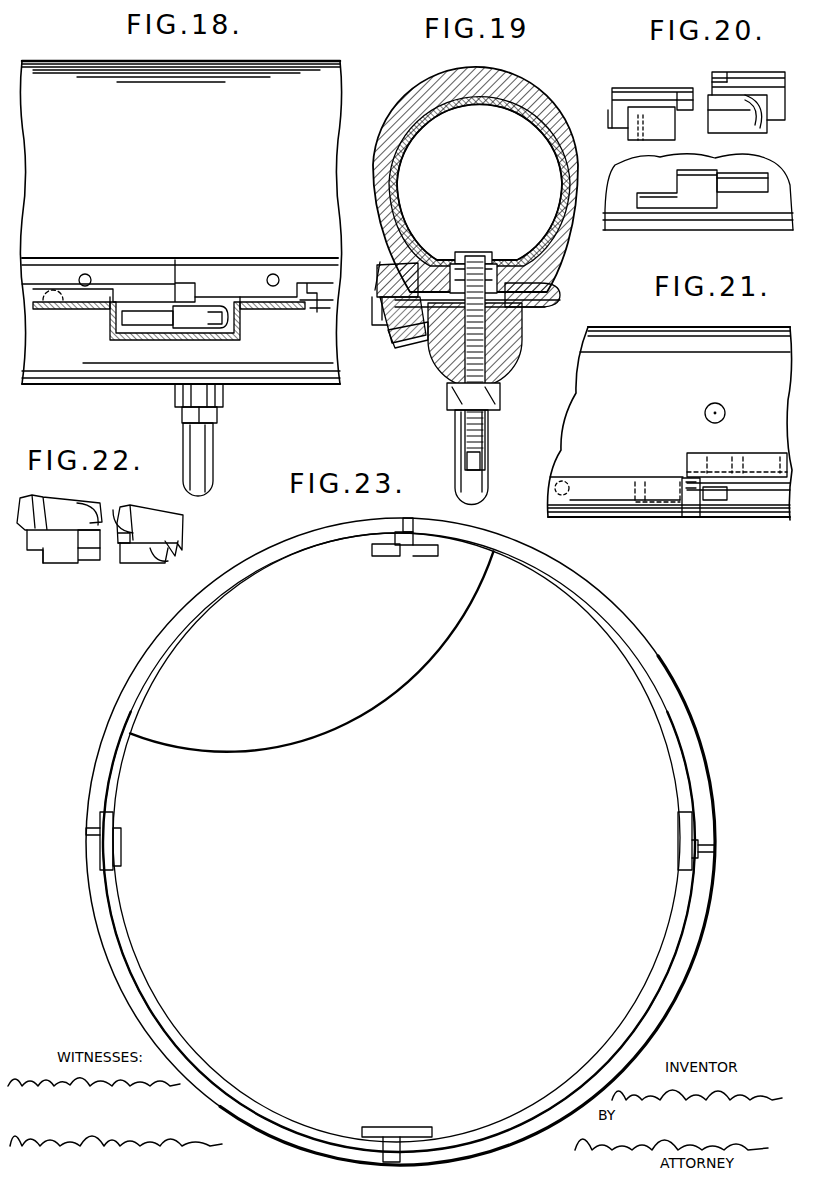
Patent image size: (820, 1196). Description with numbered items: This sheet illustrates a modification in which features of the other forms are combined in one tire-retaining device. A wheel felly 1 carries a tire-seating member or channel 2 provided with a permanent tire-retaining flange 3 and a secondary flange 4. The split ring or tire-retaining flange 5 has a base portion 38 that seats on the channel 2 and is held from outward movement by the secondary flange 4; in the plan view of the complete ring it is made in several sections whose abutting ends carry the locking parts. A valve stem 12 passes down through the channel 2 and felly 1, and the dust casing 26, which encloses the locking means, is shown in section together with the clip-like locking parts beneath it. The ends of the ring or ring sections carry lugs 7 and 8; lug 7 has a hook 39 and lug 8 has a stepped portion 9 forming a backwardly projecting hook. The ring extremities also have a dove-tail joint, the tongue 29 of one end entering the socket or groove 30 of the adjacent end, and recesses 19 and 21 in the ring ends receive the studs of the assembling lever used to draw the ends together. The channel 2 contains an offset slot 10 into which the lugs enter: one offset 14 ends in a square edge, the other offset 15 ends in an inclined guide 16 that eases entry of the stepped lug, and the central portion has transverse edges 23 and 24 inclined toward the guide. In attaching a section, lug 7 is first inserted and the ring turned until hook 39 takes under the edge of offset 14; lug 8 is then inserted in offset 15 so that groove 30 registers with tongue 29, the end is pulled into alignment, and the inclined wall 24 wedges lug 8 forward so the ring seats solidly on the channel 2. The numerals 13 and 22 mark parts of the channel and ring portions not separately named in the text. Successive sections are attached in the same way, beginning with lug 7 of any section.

In FIG. 18, the wheel felly 1 is at (181, 363).
In FIG. 19, the wheel felly 1 is at (506, 355).
In FIG. 18, the channel 2 is at (79, 332).
In FIG. 19, the channel 2 is at (520, 312).
In FIG. 20, the channel 2 is at (608, 181).
In FIG. 21, the channel 2 is at (670, 423).
In FIG. 19, the permanent tire-retaining flange 3 is at (548, 291).
In FIG. 21, the permanent tire-retaining flange 3 is at (610, 338).
In FIG. 18, the secondary flange 4 is at (312, 303).
In FIG. 19, the secondary flange 4 is at (372, 313).
In FIG. 21, the secondary flange 4 is at (762, 520).
In FIG. 18, the split ring 5 is at (47, 272).
In FIG. 19, the split ring 5 is at (395, 281).
In FIG. 20, the split ring 5 is at (625, 92).
In FIG. 21, the split ring 5 is at (618, 490).
In FIG. 22, the split ring 5 is at (66, 508).
In FIG. 23, the split ring 5 is at (117, 708).
In FIG. 18, the lug 7 is at (140, 318).
In FIG. 20, the lug 7 is at (651, 125).
In FIG. 21, the lug 7 is at (660, 482).
In FIG. 22, the lug 7 is at (68, 557).
In FIG. 23, the lug 7 is at (384, 551).
In FIG. 18, the lug 8 is at (197, 330).
In FIG. 19, the lug 8 is at (388, 333).
In FIG. 20, the lug 8 is at (713, 101).
In FIG. 21, the lug 8 is at (712, 465).
In FIG. 22, the lug 8 is at (132, 557).
In FIG. 23, the lug 8 is at (412, 553).
In FIG. 18, the stepped portion 9 is at (222, 328).
In FIG. 20, the stepped portion 9 is at (727, 123).
In FIG. 22, the stepped portion 9 is at (160, 561).
In FIG. 20, the offset slot 10 is at (698, 191).
In FIG. 21, the offset slot 10 is at (718, 502).
In FIG. 18, the valve stem 12 is at (215, 445).
In FIG. 19, the valve stem 12 is at (490, 463).
In FIG. 18, the edge 13 is at (50, 306).
In FIG. 20, the offset 14 is at (632, 205).
In FIG. 20, the offset 15 is at (720, 198).
In FIG. 20, the inclined guide 16 is at (760, 178).
In FIG. 18, the recess 19 is at (90, 273).
In FIG. 18, the recess 21 is at (273, 273).
In FIG. 18, the portion 22 is at (276, 332).
In FIG. 20, the transverse edge 23 is at (677, 183).
In FIG. 20, the inclined wall 24 is at (742, 195).
In FIG. 18, the dust casing 26 is at (170, 326).
In FIG. 19, the dust casing 26 is at (408, 345).
In FIG. 18, the tongue 29 is at (182, 280).
In FIG. 19, the tongue 29 is at (385, 269).
In FIG. 20, the tongue 29 is at (682, 96).
In FIG. 21, the tongue 29 is at (690, 517).
In FIG. 22, the tongue 29 is at (94, 516).
In FIG. 23, the tongue 29 is at (398, 529).
In FIG. 18, the socket or groove 30 is at (205, 290).
In FIG. 20, the socket or groove 30 is at (720, 80).
In FIG. 22, the socket or groove 30 is at (130, 518).
In FIG. 23, the socket or groove 30 is at (438, 515).
In FIG. 18, the base portion 38 is at (118, 300).
In FIG. 19, the base portion 38 is at (487, 179).
In FIG. 20, the base portion 38 is at (612, 100).
In FIG. 22, the base portion 38 is at (176, 555).
In FIG. 23, the base portion 38 is at (207, 618).
In FIG. 20, the hook 39 is at (622, 134).
In FIG. 22, the hook 39 is at (42, 557).